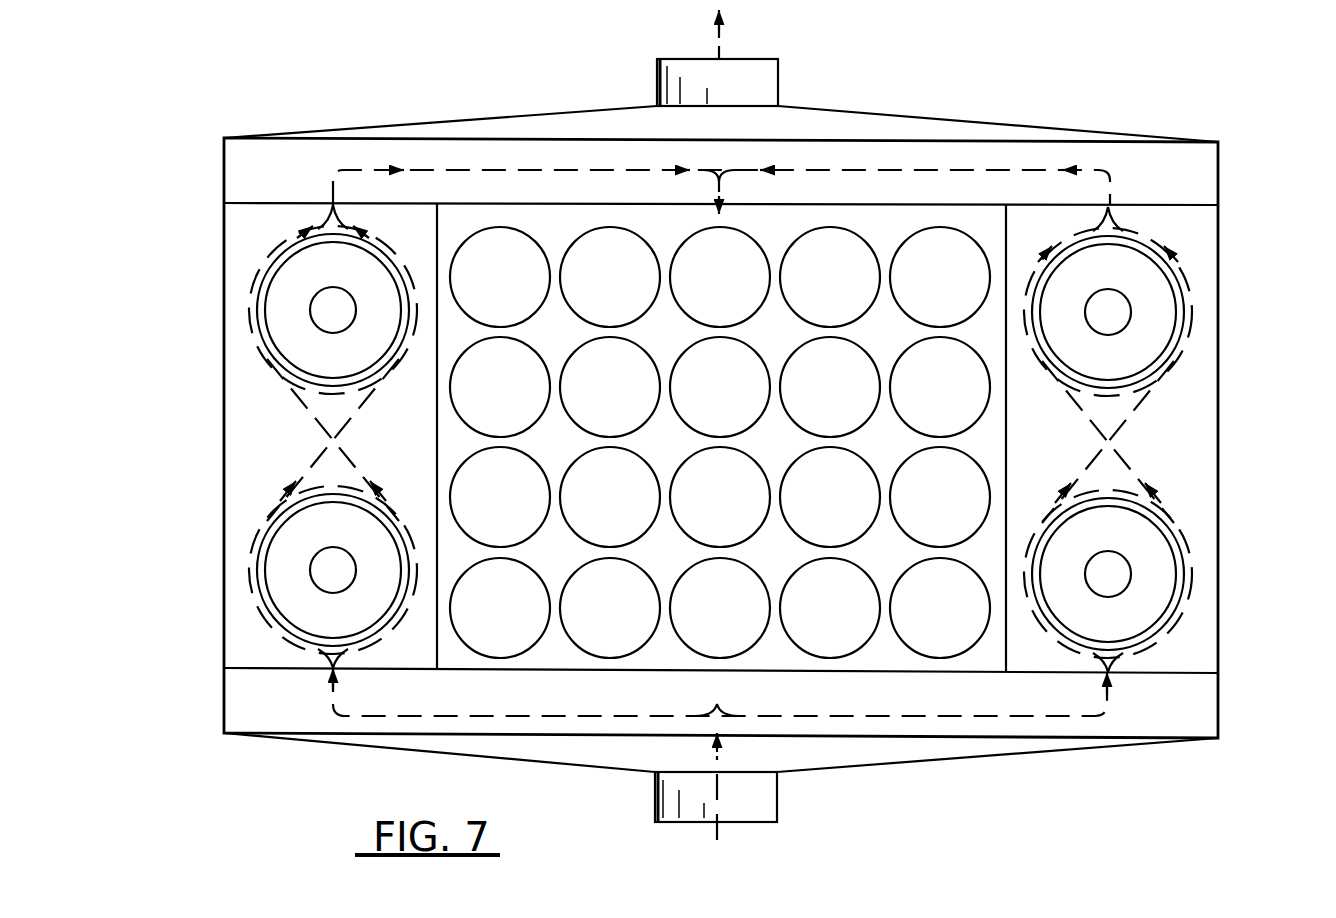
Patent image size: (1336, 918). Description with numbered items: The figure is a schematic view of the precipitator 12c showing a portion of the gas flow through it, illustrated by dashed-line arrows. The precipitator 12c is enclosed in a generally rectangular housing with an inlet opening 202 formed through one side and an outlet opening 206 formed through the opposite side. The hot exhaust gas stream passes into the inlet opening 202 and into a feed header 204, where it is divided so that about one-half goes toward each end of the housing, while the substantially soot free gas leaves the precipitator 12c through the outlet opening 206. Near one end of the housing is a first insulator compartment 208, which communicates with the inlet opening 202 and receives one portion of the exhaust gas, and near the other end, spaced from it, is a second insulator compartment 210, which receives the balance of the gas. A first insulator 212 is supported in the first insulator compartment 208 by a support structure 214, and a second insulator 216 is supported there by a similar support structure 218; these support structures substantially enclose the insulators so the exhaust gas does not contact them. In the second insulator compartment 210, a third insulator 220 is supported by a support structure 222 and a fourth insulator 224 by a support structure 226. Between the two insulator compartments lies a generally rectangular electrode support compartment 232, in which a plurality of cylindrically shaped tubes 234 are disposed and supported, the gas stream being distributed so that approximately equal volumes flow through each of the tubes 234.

The precipitator 12c is at (270, 132).
The inlet opening 202 is at (781, 786).
The feed header 204 is at (220, 733).
The outlet opening 206 is at (784, 92).
The first insulator compartment 208 is at (296, 440).
The second insulator compartment 210 is at (1185, 444).
The first insulator 212 is at (307, 578).
The support structure 214 is at (263, 562).
The second insulator 216 is at (308, 306).
The support structure 218 is at (263, 276).
The third insulator 220 is at (1133, 592).
The support structure 222 is at (1174, 546).
The fourth insulator 224 is at (1133, 318).
The support structure 226 is at (1176, 270).
The electrode support compartment 232 is at (892, 230).
The tubes 234 is at (576, 236).